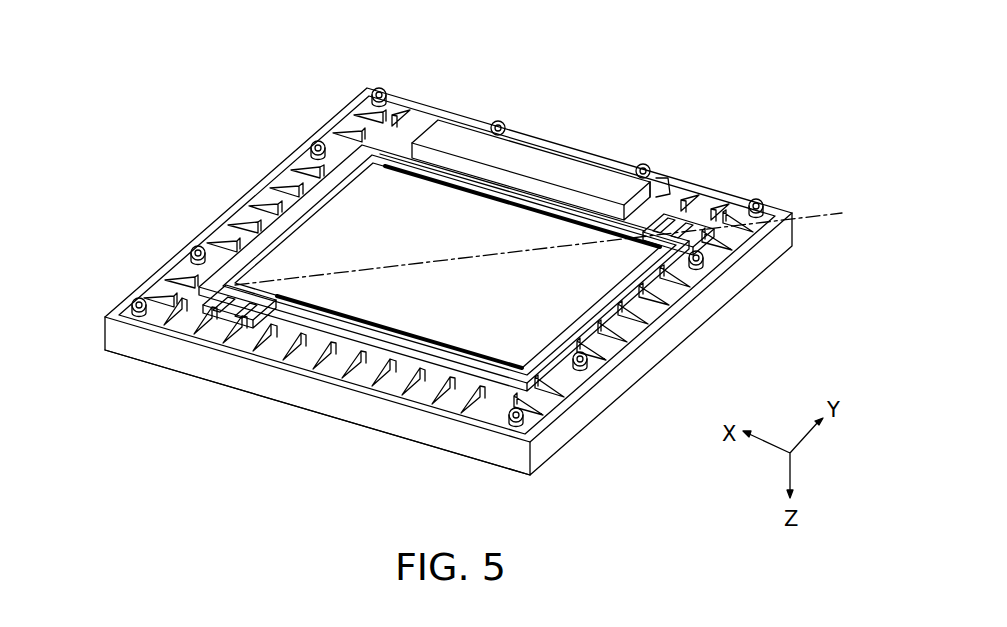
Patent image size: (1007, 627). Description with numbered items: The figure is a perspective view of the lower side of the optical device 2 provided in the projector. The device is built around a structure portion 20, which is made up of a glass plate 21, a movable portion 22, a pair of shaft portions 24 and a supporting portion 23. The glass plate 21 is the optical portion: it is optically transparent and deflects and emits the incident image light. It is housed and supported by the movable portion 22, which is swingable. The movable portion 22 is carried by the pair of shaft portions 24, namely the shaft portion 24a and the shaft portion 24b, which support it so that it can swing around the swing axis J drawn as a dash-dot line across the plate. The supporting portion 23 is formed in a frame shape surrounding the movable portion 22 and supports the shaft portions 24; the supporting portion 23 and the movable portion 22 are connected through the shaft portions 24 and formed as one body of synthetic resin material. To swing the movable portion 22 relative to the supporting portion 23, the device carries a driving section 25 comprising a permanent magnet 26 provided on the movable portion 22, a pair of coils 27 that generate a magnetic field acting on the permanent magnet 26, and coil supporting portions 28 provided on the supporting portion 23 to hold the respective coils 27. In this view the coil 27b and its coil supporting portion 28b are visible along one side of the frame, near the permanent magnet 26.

The optical device 2 is at (176, 66).
The structure portion 20 is at (568, 429).
The glass plate 21 is at (598, 283).
The movable portion 22 is at (556, 346).
The supporting portion 23 is at (419, 432).
The shaft portions 24 is at (455, 331).
The shaft portion 24a is at (695, 234).
The shaft portion 24b is at (212, 294).
The driving section 25 is at (652, 74).
The permanent magnet 26 is at (650, 180).
The coils 27 is at (520, 178).
The coil 27b is at (553, 200).
The coil supporting portions 28 is at (531, 152).
The coil supporting portion 28b is at (535, 158).
The swing axis J is at (413, 265).